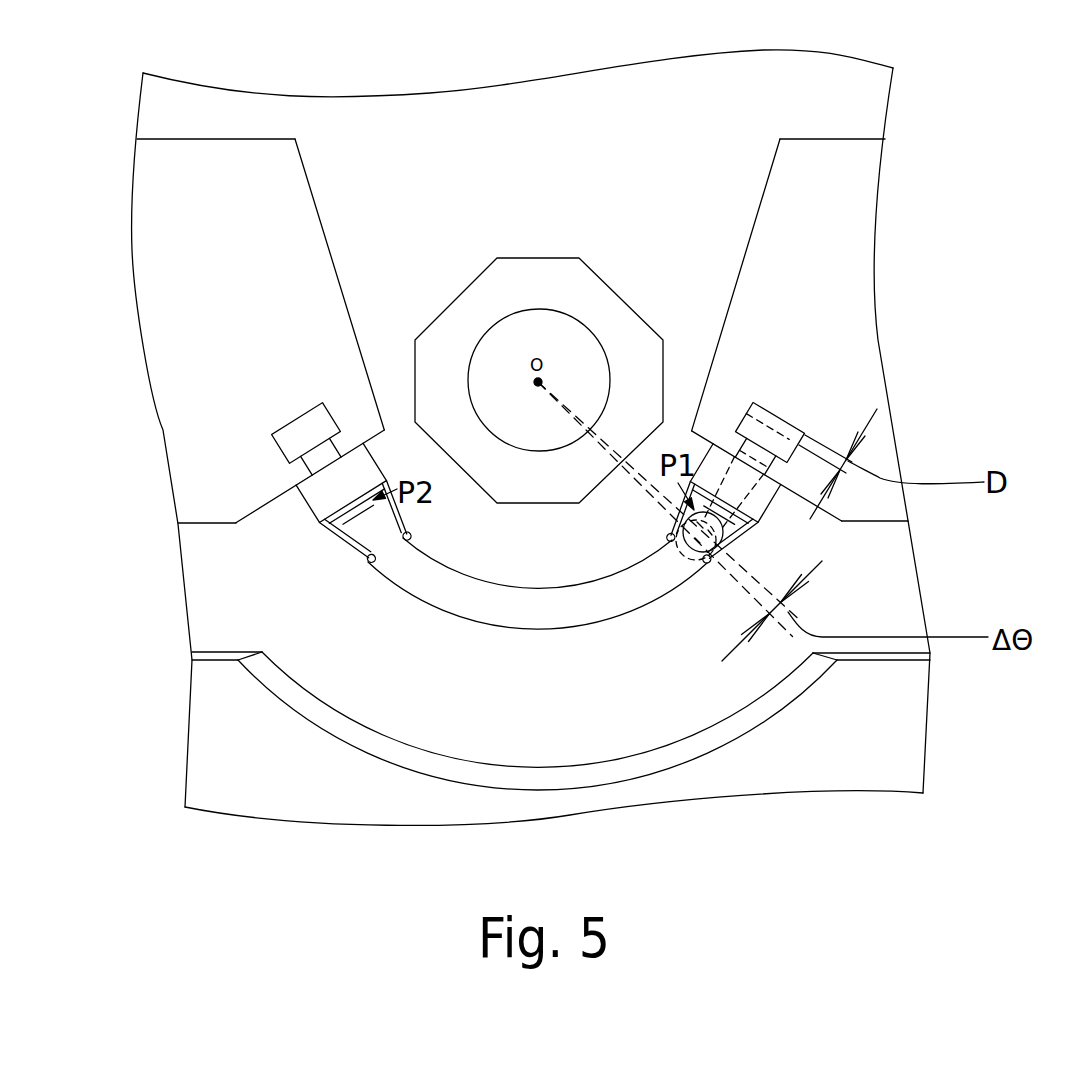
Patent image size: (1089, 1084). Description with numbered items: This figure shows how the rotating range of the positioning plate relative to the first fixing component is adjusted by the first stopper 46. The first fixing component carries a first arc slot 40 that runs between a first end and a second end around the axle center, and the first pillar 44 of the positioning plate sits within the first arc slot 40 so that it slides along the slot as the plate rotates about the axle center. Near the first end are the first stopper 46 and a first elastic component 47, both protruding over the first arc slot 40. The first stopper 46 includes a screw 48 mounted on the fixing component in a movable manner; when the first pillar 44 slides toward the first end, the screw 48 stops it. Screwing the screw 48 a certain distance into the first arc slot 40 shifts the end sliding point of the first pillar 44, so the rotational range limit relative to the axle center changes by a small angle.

The first arc slot 40 is at (553, 627).
The first pillar 44 is at (692, 566).
The first stopper 46 is at (758, 385).
The first elastic component 47 is at (717, 586).
The screw 48 is at (781, 420).